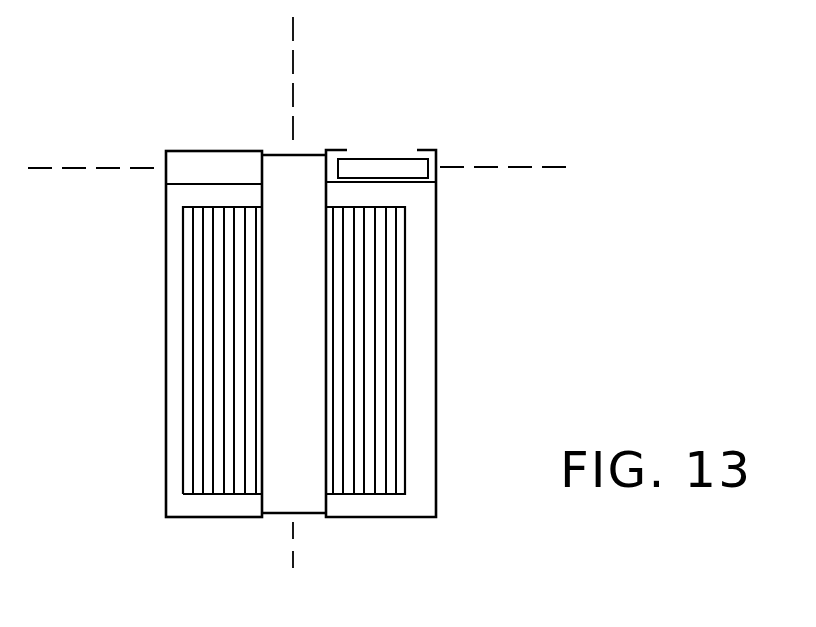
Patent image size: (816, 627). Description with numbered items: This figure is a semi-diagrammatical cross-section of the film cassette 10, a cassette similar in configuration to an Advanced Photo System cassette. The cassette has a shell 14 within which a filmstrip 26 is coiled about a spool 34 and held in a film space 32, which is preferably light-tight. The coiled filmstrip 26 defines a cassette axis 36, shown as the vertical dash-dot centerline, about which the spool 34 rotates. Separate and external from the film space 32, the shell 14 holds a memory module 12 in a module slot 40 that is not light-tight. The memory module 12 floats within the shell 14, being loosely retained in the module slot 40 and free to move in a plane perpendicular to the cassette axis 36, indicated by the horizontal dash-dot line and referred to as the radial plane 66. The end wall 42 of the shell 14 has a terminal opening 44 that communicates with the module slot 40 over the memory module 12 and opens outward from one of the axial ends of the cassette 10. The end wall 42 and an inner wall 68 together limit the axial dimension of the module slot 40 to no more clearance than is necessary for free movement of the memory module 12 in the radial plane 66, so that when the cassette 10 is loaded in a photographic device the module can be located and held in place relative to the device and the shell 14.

The film cassette 10 is at (470, 98).
The memory module 12 is at (400, 157).
The shell 14 is at (437, 452).
The filmstrip 26 is at (410, 313).
The film space 32 is at (423, 357).
The spool 34 is at (281, 155).
The cassette axis 36 is at (292, 60).
The module slot 40 is at (431, 172).
The end wall 42 is at (185, 151).
The terminal opening 44 is at (375, 155).
The radial plane 66 is at (480, 165).
The inner wall 68 is at (337, 183).